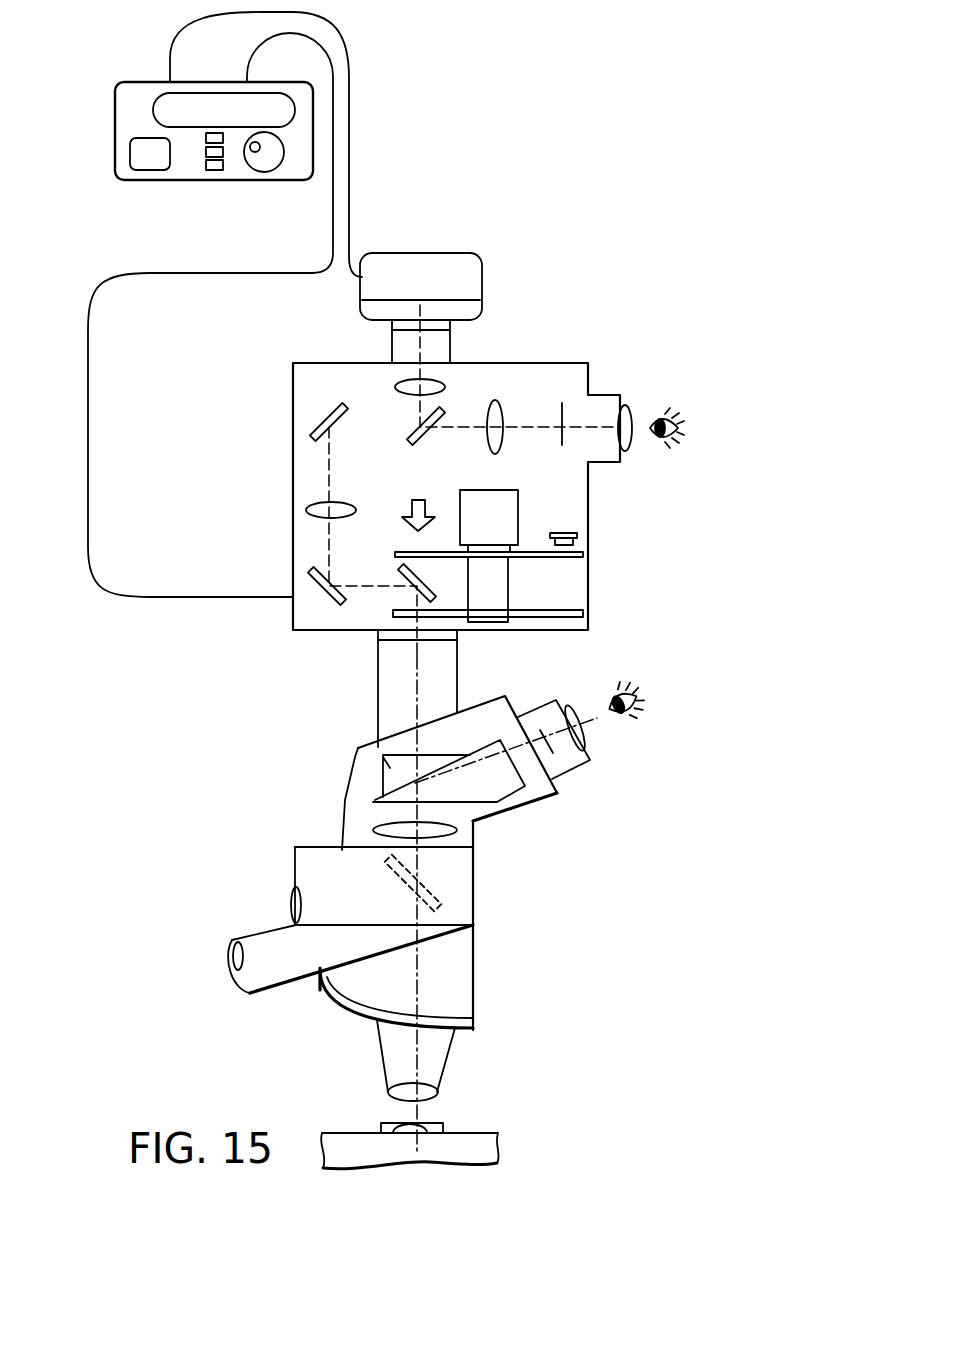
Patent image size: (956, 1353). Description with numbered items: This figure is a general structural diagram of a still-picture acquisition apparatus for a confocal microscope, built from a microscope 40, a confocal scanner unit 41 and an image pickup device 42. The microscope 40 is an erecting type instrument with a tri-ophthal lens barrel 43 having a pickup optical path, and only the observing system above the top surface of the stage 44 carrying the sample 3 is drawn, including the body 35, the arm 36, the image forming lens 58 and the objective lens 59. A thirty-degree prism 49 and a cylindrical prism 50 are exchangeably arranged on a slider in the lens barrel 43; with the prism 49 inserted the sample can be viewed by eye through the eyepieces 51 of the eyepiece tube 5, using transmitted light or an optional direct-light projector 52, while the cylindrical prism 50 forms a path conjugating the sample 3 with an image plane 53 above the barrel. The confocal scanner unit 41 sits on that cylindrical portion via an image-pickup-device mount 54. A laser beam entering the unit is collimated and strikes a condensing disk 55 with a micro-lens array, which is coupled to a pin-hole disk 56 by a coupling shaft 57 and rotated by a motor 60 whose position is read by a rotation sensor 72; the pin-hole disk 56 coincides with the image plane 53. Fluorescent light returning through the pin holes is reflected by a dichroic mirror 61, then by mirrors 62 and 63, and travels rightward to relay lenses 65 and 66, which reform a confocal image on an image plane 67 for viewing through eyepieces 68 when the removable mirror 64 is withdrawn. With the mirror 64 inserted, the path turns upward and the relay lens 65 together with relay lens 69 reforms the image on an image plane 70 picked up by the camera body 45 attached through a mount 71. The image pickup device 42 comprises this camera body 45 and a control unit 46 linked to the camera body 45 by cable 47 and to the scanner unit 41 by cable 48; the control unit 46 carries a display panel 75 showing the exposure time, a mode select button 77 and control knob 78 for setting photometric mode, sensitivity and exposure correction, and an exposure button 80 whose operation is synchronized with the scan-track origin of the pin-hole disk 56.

The sample 3 is at (425, 1125).
The eyepiece 5 is at (568, 772).
The microscope body 35 is at (473, 970).
The arm 36 is at (252, 936).
The microscope 40 is at (797, 653).
The confocal scanner unit 41 is at (499, 339).
The image pickup device 42 is at (800, 34).
The tri-ophthal lens barrel 43 is at (298, 645).
The stage 44 is at (487, 1137).
The camera body 45 is at (393, 253).
The control unit 46 is at (260, 135).
The cable 47 is at (349, 38).
The cable 48 is at (88, 370).
The 30-degree prism 49 is at (497, 790).
The cylindrical prism 50 is at (383, 757).
The eyepieces 51 is at (583, 740).
The direct-light projector 52 is at (498, 853).
The image plane 53 is at (380, 628).
The image-pickup-device mount 54 is at (392, 634).
The condensing disk 55 is at (585, 554).
The pin-hole disk 56 is at (580, 611).
The coupling shaft 57 is at (510, 582).
The image forming lens 58 is at (457, 832).
The objective lens 59 is at (450, 1050).
The motor 60 is at (503, 490).
The dichroic mirror 61 is at (440, 596).
The mirror 62 is at (310, 583).
The mirror 63 is at (312, 428).
The mirror 64 is at (442, 412).
The relay lens 65 is at (308, 508).
The relay lens 66 is at (497, 402).
The image plane 67 is at (564, 403).
The eyepieces 68 is at (628, 404).
The relay lens 69 is at (400, 385).
The image plane 70 is at (392, 313).
The mount 71 is at (445, 338).
The rotation sensor 72 is at (573, 533).
The display panel 75 is at (270, 93).
The mode select button 77 is at (214, 170).
The control knob 78 is at (284, 150).
The exposure button 80 is at (140, 168).